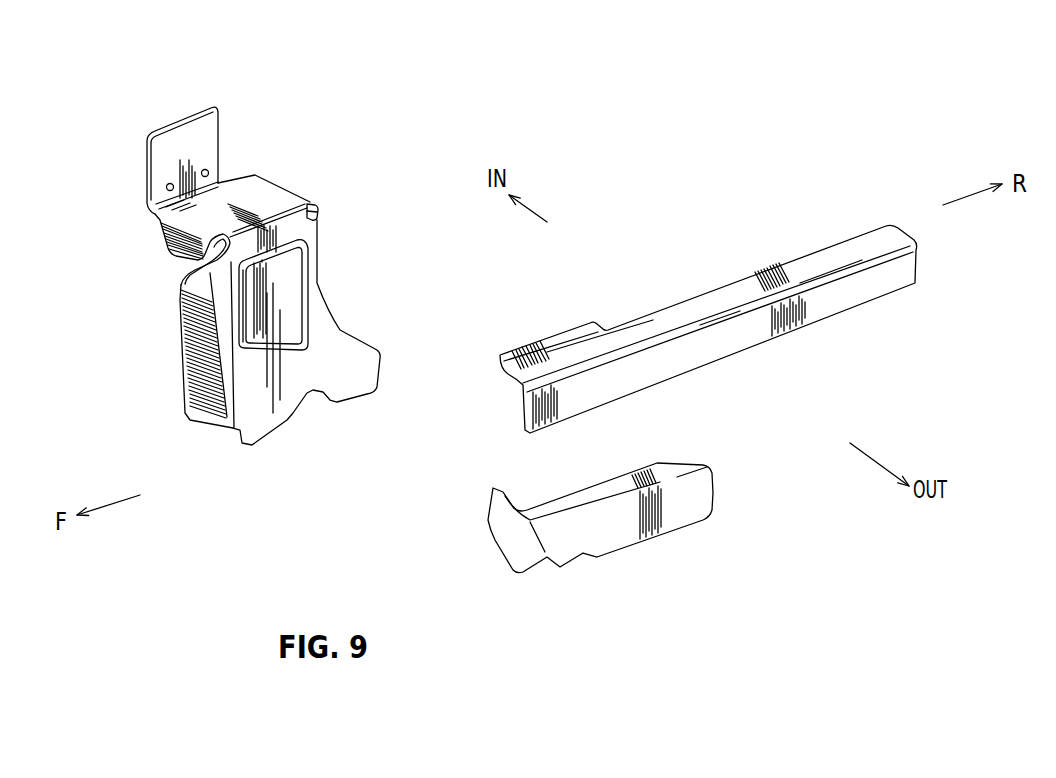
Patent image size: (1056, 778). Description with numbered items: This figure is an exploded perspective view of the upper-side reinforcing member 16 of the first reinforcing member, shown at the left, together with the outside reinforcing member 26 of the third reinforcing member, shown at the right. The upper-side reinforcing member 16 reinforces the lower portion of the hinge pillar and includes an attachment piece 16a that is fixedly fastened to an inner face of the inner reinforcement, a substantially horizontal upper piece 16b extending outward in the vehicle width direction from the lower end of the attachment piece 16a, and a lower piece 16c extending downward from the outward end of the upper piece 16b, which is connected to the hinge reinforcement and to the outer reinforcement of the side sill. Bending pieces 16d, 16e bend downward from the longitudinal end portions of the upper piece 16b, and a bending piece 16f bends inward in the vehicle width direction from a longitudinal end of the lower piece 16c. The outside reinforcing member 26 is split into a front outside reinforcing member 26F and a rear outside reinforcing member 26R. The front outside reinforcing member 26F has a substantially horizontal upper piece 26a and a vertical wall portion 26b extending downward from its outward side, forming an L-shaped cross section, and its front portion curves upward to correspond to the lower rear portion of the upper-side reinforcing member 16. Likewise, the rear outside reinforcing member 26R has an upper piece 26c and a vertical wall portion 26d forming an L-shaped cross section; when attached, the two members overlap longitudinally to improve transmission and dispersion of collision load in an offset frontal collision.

The upper-side reinforcing member 16 is at (299, 185).
The attachment piece 16a is at (183, 135).
The upper piece 16b is at (252, 187).
The lower piece 16c is at (320, 330).
The bending piece 16d is at (167, 243).
The bending piece 16e is at (319, 210).
The bending piece 16f is at (200, 380).
The outside reinforcing member 26 is at (712, 237).
The rear outside reinforcing member 26R is at (670, 305).
The front outside reinforcing member 26F is at (614, 477).
The upper piece 26a is at (592, 500).
The vertical wall portion 26b is at (613, 547).
The upper piece 26c is at (728, 298).
The vertical wall portion 26d is at (750, 336).